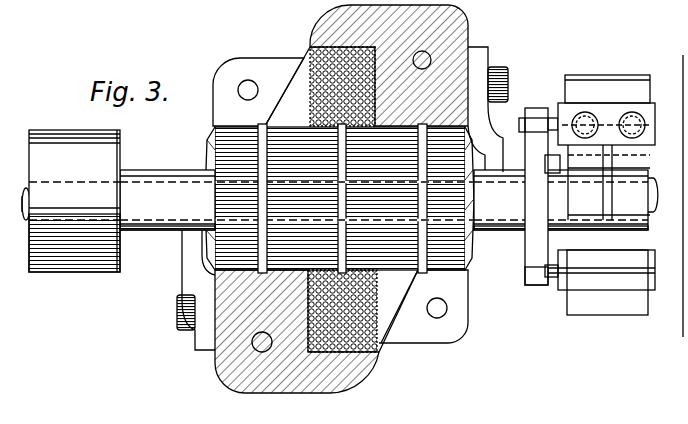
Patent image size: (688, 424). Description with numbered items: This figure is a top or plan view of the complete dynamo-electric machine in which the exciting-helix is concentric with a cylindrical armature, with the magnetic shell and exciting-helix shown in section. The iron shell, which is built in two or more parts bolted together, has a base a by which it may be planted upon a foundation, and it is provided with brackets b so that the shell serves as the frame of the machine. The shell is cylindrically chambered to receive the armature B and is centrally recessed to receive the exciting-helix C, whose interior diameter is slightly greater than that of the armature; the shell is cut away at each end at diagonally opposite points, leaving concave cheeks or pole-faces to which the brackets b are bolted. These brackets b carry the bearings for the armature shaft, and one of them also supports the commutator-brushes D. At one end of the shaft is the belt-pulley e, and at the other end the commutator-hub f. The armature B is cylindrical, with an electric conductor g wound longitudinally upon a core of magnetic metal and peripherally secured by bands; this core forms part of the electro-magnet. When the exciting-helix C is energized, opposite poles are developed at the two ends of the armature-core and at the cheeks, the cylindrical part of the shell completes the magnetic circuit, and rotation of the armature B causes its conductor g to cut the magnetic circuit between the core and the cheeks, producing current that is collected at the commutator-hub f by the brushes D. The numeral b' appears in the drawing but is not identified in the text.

The base a is at (239, 201).
The brackets b is at (389, 191).
The field-magnet core b' is at (341, 199).
The armature B is at (340, 198).
The exciting-helix C is at (310, 47).
The commutator-brushes D is at (597, 282).
The belt-pulley e is at (331, 187).
The commutator-hub f is at (608, 183).
The electric conductor g is at (280, 198).